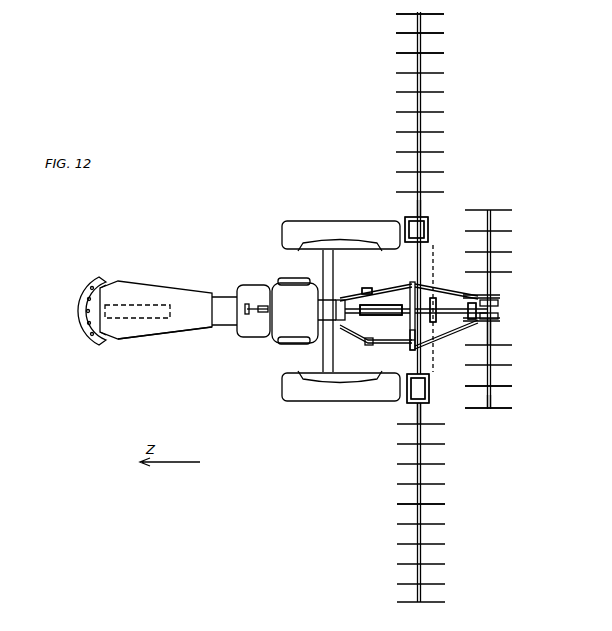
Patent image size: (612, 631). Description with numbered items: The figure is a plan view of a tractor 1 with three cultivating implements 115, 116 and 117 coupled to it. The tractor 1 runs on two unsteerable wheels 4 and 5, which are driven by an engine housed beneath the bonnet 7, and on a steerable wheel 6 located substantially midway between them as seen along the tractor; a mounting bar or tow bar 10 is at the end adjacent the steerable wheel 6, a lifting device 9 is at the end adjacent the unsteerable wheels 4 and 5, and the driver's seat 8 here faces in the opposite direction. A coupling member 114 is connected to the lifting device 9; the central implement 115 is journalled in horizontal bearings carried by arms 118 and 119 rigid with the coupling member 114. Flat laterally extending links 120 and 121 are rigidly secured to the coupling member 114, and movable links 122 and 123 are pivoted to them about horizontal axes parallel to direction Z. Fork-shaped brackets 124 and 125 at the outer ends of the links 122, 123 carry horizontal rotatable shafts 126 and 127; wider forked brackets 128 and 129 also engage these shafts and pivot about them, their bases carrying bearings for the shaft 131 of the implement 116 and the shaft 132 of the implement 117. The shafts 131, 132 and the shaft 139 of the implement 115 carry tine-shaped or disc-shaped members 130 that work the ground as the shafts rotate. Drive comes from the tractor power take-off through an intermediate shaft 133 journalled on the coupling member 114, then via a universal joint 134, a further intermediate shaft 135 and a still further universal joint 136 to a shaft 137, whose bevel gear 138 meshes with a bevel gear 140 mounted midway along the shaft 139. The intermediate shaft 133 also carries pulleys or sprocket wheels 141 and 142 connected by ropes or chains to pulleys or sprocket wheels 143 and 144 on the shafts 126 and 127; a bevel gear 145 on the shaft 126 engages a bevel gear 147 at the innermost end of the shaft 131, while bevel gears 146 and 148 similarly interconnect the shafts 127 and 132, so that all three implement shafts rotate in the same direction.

The tractor 1 is at (222, 296).
The unsteerable wheel 4 is at (278, 400).
The unsteerable wheel 5 is at (300, 224).
The steerable wheel 6 is at (136, 305).
The bonnet 7 is at (180, 332).
The driver's seat 8 is at (268, 287).
The lifting device 9 is at (358, 312).
The mounting bar or tow bar 10 is at (88, 330).
The coupling member 114 is at (410, 286).
The cultivating implement 115 is at (500, 239).
The cultivating implement 116 is at (430, 556).
The cultivating implement 117 is at (428, 86).
The arm 118 is at (484, 295).
The arm 119 is at (440, 350).
The link 120 is at (404, 346).
The link 121 is at (402, 277).
The movable link 122 is at (413, 350).
The movable link 123 is at (412, 270).
The fork-shaped bracket 124 is at (437, 380).
The fork-shaped bracket 125 is at (436, 242).
The horizontal rotatable shaft 126 is at (408, 400).
The horizontal rotatable shaft 127 is at (405, 235).
The forked bracket 128 is at (427, 400).
The forked bracket 129 is at (407, 225).
The tine-shaped or disc-shaped members 130 is at (440, 14).
The shaft 131 is at (417, 512).
The shaft 132 is at (416, 40).
The intermediate shaft 133 is at (404, 306).
The universal joint 134 is at (470, 302).
The further intermediate shaft 135 is at (446, 331).
The universal joint 136 is at (472, 321).
The shaft 137 is at (492, 330).
The bevel gear 138 is at (496, 316).
The shaft 139 is at (491, 409).
The bevel gear 140 is at (496, 303).
The pulley or sprocket wheel 141 is at (442, 292).
The pulley or sprocket wheel 142 is at (412, 316).
The pulley or sprocket wheel 143 is at (434, 395).
The pulley or sprocket wheel 144 is at (426, 222).
The bevel gear 145 is at (407, 386).
The bevel gear 146 is at (406, 230).
The bevel gear 147 is at (412, 408).
The bevel gear 148 is at (412, 218).